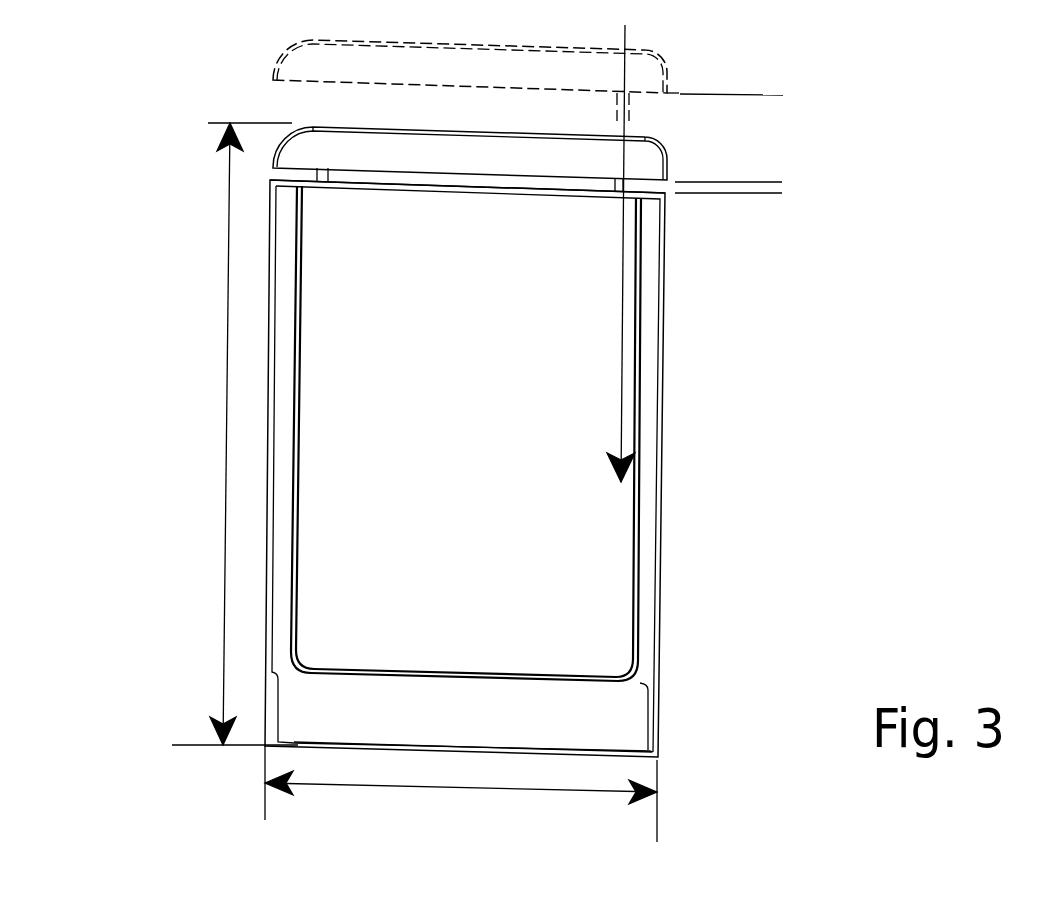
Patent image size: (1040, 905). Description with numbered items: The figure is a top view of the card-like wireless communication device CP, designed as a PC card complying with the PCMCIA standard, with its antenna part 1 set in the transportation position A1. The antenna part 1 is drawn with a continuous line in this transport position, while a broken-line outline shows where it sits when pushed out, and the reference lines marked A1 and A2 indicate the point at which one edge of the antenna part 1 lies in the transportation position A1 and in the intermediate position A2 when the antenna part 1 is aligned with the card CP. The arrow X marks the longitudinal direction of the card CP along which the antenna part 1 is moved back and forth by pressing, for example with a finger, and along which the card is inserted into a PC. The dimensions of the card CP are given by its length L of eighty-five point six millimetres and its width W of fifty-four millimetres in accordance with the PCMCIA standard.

The antenna part 1 is at (294, 161).
The transportation position A1 is at (732, 186).
The intermediate position A2 is at (735, 95).
The arrow indicating longitudinal direction X is at (622, 335).
The card-like wireless communication device CP is at (786, 497).
The length L is at (228, 338).
The width W is at (367, 787).